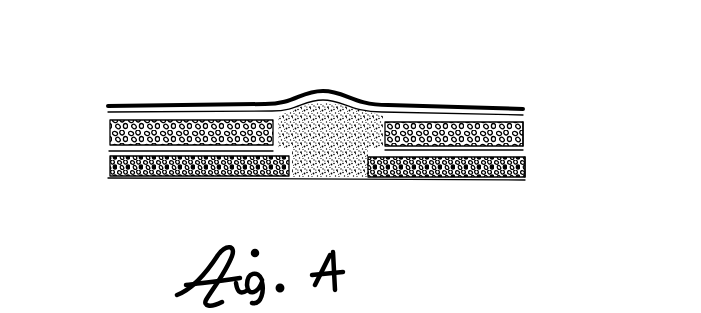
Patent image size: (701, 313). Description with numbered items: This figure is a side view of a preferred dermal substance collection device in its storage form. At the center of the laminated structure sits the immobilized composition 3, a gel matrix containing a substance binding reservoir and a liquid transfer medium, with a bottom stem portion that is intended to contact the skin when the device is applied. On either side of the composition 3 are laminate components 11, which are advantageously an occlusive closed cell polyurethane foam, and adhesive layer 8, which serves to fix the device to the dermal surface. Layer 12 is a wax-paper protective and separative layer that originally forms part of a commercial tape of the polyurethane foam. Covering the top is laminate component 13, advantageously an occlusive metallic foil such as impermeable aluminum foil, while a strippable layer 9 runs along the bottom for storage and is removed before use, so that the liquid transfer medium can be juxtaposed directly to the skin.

The composition 3 is at (358, 120).
The adhesive layer 8 is at (110, 112).
The strippable layer 9 is at (213, 178).
The laminate components 11 is at (525, 135).
The layer 12 is at (107, 157).
The laminate component 13 is at (504, 107).